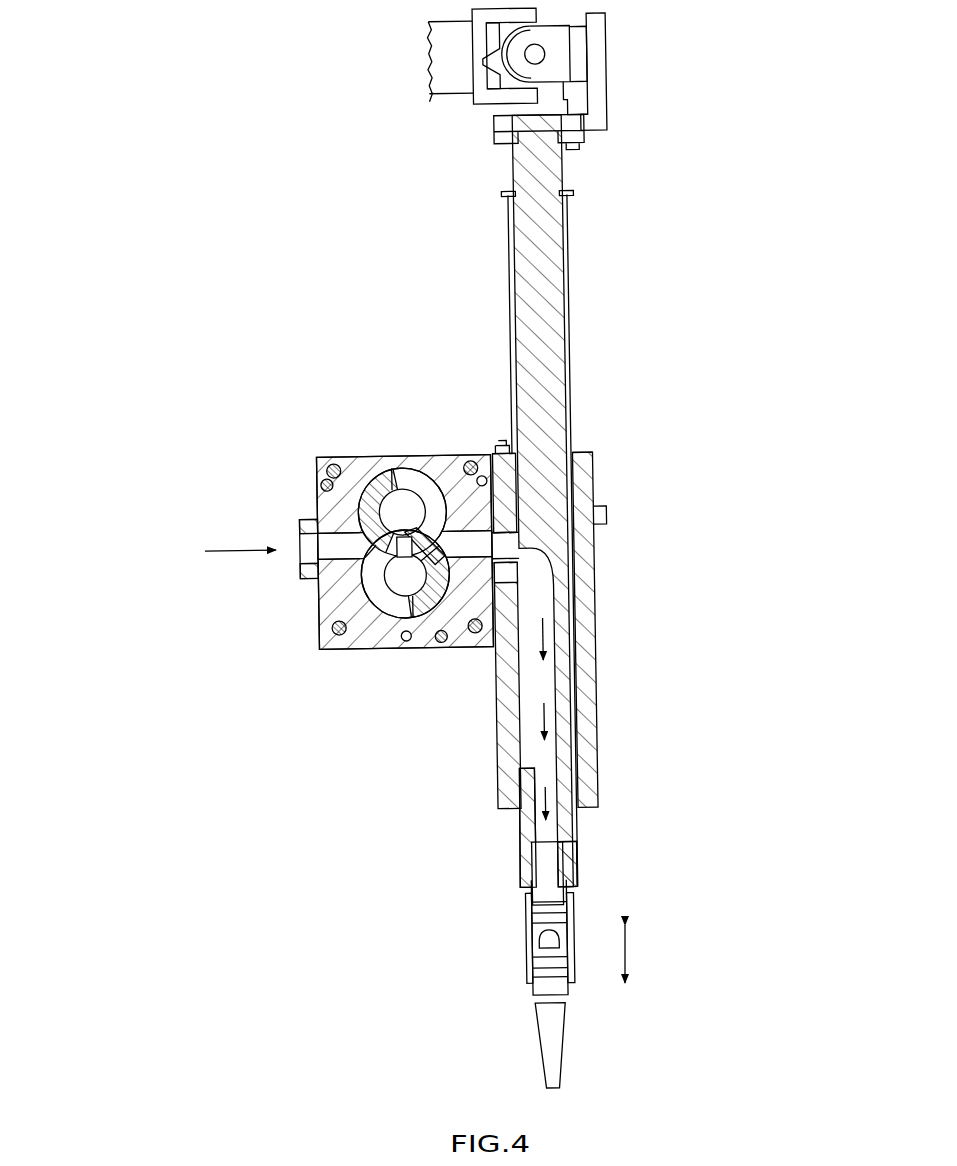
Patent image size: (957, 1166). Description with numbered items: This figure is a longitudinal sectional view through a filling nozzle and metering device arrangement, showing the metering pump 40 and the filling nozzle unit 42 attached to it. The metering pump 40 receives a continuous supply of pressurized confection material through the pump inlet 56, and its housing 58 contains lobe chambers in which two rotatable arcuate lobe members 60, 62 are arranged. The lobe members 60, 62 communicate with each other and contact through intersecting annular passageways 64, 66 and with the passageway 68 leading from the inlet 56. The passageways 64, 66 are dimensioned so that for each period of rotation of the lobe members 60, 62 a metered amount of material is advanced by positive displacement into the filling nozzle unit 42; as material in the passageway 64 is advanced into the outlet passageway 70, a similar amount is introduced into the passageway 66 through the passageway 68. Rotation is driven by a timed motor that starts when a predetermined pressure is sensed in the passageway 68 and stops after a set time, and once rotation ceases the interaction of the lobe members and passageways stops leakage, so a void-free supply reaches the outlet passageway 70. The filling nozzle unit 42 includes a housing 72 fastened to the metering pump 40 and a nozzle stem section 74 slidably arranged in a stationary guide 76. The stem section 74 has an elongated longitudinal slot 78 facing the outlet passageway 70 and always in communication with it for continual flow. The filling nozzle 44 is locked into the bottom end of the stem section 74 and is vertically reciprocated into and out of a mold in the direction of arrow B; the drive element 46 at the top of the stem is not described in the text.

The metering pump 40 is at (348, 545).
The filling nozzle unit 42 is at (590, 443).
The filling nozzle 44 is at (565, 1045).
The drive coupling 46 is at (426, 65).
The pump inlet 56 is at (300, 560).
The housing 58 is at (407, 649).
The lobe member 60 is at (415, 492).
The lobe member 62 is at (389, 618).
The annular passageway 64 is at (439, 492).
The annular passageway 66 is at (372, 590).
The passageway 68 is at (342, 535).
The outlet passageway 70 is at (465, 580).
The housing 72 is at (596, 493).
The nozzle stem section 74 is at (561, 309).
The stationary guide 76 is at (572, 389).
The elongated longitudinal slot 78 is at (517, 741).
The arrow B is at (628, 957).